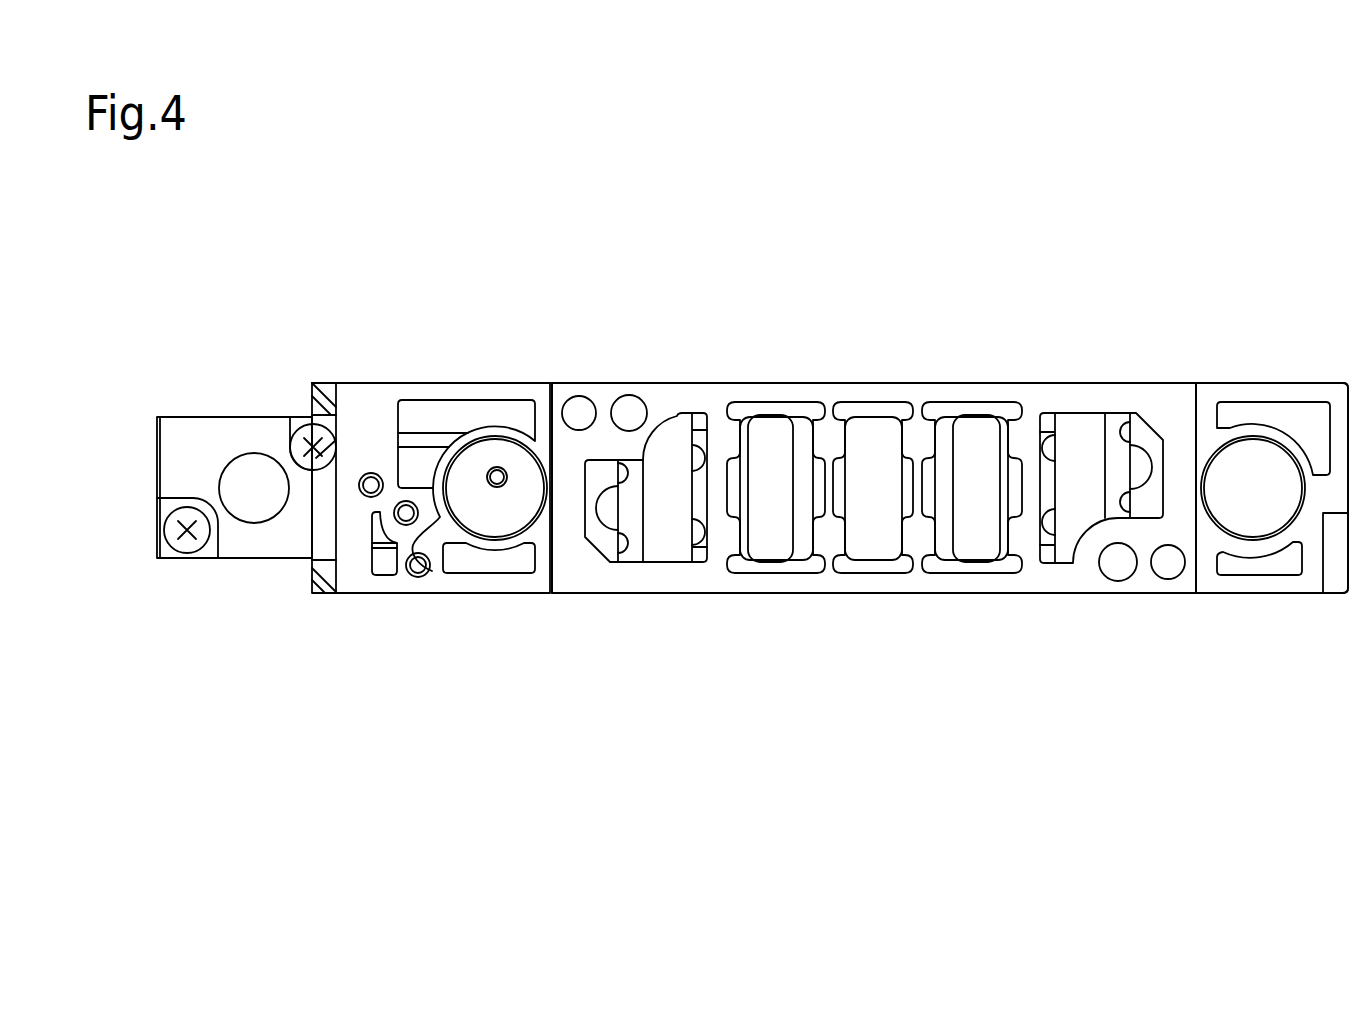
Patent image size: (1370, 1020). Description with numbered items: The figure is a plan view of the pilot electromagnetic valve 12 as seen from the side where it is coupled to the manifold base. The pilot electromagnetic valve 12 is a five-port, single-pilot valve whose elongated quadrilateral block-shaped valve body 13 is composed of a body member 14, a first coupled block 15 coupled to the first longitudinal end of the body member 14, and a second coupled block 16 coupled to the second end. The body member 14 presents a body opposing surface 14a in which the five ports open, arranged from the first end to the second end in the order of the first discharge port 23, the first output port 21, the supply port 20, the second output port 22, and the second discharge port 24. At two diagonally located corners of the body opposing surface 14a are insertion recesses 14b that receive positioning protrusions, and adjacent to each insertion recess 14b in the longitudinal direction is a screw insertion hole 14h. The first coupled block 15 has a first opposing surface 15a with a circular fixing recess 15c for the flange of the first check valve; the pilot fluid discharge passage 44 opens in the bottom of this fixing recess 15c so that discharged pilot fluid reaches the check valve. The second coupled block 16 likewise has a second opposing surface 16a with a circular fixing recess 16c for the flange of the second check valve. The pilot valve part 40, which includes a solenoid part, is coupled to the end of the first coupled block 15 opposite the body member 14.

The pilot electromagnetic valve 12 is at (1314, 349).
The valve body 13 is at (1115, 383).
The body member 14 is at (718, 593).
The body opposing surface 14a is at (720, 383).
The insertion recess 14b is at (577, 410).
The screw insertion hole 14h is at (636, 408).
The first coupled block 15 is at (380, 593).
The first opposing surface 15a is at (362, 383).
The fixing recess 15c is at (462, 514).
The second coupled block 16 is at (1312, 593).
The second opposing surface 16a is at (1256, 428).
The fixing recess 16c is at (1278, 518).
The supply port 20 is at (873, 543).
The first output port 21 is at (773, 543).
The second output port 22 is at (968, 543).
The first discharge port 23 is at (662, 543).
The second discharge port 24 is at (1068, 522).
The pilot valve part 40 is at (185, 417).
The pilot fluid discharge passage 44 is at (494, 467).